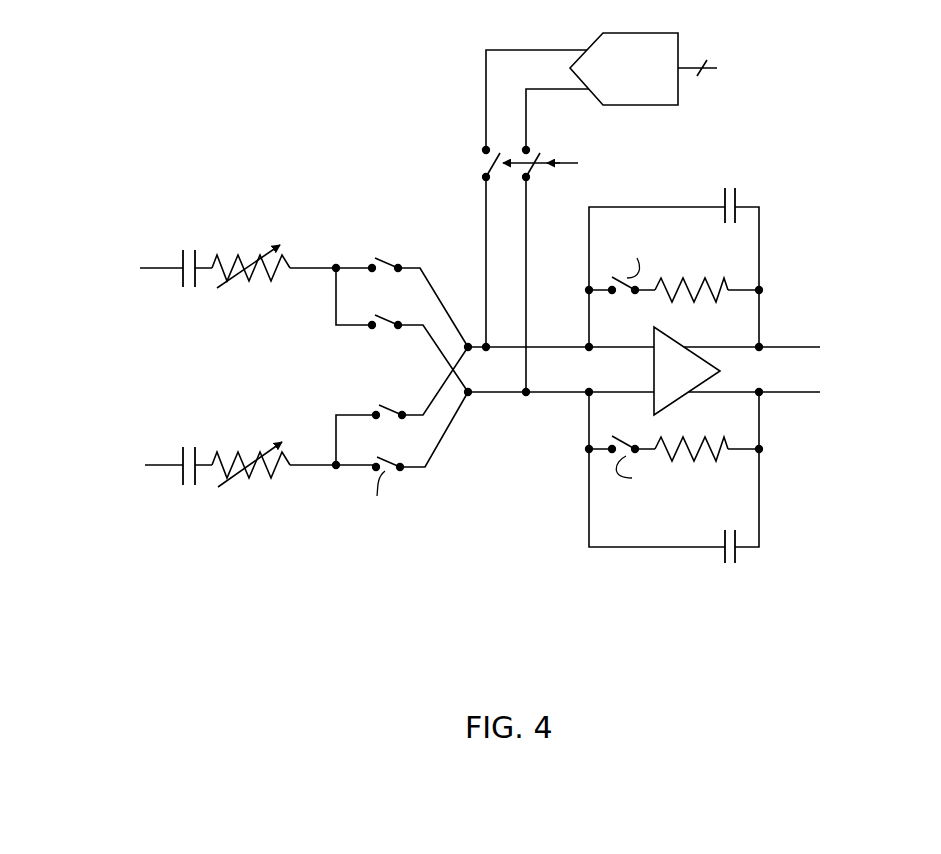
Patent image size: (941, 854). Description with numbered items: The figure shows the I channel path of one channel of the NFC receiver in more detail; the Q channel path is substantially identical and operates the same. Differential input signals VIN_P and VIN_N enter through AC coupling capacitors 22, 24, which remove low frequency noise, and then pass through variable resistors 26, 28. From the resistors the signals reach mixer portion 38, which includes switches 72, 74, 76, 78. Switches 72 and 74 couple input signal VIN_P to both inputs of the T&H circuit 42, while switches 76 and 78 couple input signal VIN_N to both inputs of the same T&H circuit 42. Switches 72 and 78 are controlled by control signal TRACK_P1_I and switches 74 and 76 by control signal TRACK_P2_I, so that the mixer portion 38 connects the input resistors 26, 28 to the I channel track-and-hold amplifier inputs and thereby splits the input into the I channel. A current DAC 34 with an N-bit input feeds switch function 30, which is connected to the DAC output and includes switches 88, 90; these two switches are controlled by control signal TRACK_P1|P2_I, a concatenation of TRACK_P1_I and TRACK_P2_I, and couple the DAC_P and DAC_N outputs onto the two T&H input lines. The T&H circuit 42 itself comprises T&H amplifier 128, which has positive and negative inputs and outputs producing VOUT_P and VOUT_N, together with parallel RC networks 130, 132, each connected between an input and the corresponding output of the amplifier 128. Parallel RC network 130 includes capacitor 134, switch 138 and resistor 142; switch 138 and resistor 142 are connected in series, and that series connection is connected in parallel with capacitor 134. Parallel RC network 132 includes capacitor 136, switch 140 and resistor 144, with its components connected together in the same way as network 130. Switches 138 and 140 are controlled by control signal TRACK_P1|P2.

The AC coupling capacitor 22 is at (193, 248).
The AC coupling capacitor 24 is at (194, 490).
The variable resistor 26 is at (222, 247).
The variable resistor 28 is at (243, 480).
The switch function 30 is at (460, 155).
The DAC 34 is at (617, 33).
The mixer portion 38 is at (328, 118).
The T&H circuit 42 is at (553, 533).
The switch 72 is at (386, 268).
The switch 74 is at (382, 331).
The switch 76 is at (391, 418).
The switch 78 is at (383, 460).
The switch 88 is at (482, 167).
The switch 90 is at (540, 172).
The T&H amplifier 128 is at (652, 387).
The parallel RC network 130 is at (817, 185).
The parallel RC network 132 is at (813, 543).
The capacitor 134 is at (725, 188).
The capacitor 136 is at (735, 563).
The switch 138 is at (622, 293).
The switch 140 is at (631, 436).
The resistor 142 is at (693, 303).
The resistor 144 is at (680, 437).